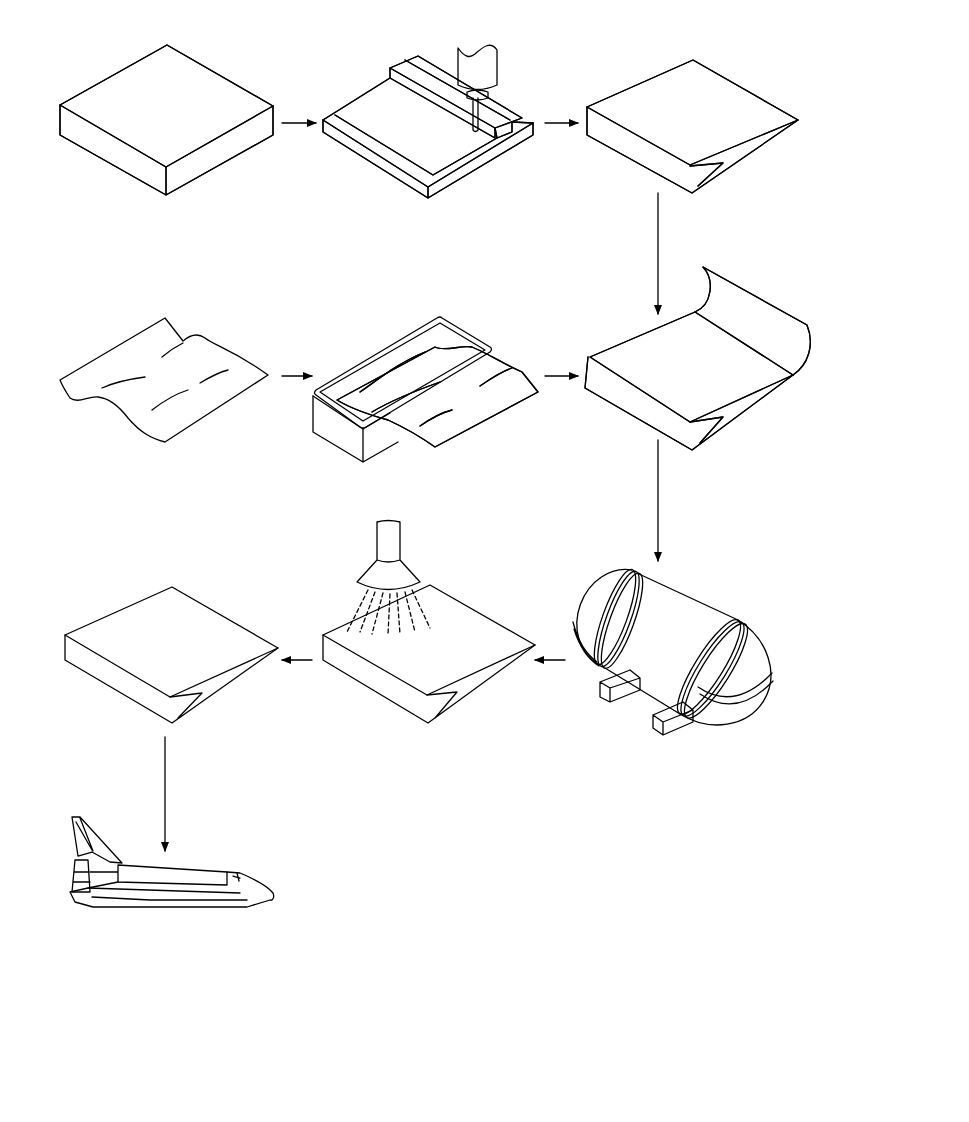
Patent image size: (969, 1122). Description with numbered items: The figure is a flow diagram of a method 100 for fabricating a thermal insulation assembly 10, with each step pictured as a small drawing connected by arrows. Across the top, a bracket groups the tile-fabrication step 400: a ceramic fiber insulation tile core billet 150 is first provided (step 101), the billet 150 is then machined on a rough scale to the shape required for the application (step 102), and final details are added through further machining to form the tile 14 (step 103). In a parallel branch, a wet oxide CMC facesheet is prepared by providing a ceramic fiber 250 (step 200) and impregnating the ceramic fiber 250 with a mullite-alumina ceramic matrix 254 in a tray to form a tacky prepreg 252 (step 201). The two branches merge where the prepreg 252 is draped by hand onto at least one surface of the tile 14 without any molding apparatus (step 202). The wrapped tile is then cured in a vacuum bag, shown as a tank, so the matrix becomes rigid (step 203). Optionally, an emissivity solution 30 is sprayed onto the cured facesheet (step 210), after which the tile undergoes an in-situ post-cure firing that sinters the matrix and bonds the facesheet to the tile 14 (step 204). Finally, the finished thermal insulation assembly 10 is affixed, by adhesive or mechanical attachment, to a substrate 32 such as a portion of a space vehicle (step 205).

The method 100 is at (775, 23).
The step of fabricating tile 400 is at (798, 56).
The step of providing billet 101 is at (166, 101).
The step of machining billet 102 is at (428, 105).
The step of forming tile 103 is at (692, 115).
The ceramic fiber insulation tile core billet 150 is at (115, 72).
The tile 14 is at (627, 84).
The step of providing ceramic fiber 200 is at (164, 371).
The ceramic fiber 250 is at (112, 348).
The step of impregnating ceramic fiber 201 is at (425, 382).
The mullite-alumina ceramic matrix 254 is at (390, 368).
The prepreg 252 is at (520, 368).
The step of draping prepreg on tile 202 is at (697, 356).
The step of curing 203 is at (673, 650).
The step of applying emissivity coating 210 is at (416, 622).
The emissivity solution 30 is at (350, 604).
The step of in-situ post cure firing 204 is at (171, 639).
The thermal insulation assembly 10 is at (140, 600).
The step of affixing assembly to substrate 205 is at (179, 862).
The substrate 32 is at (220, 866).